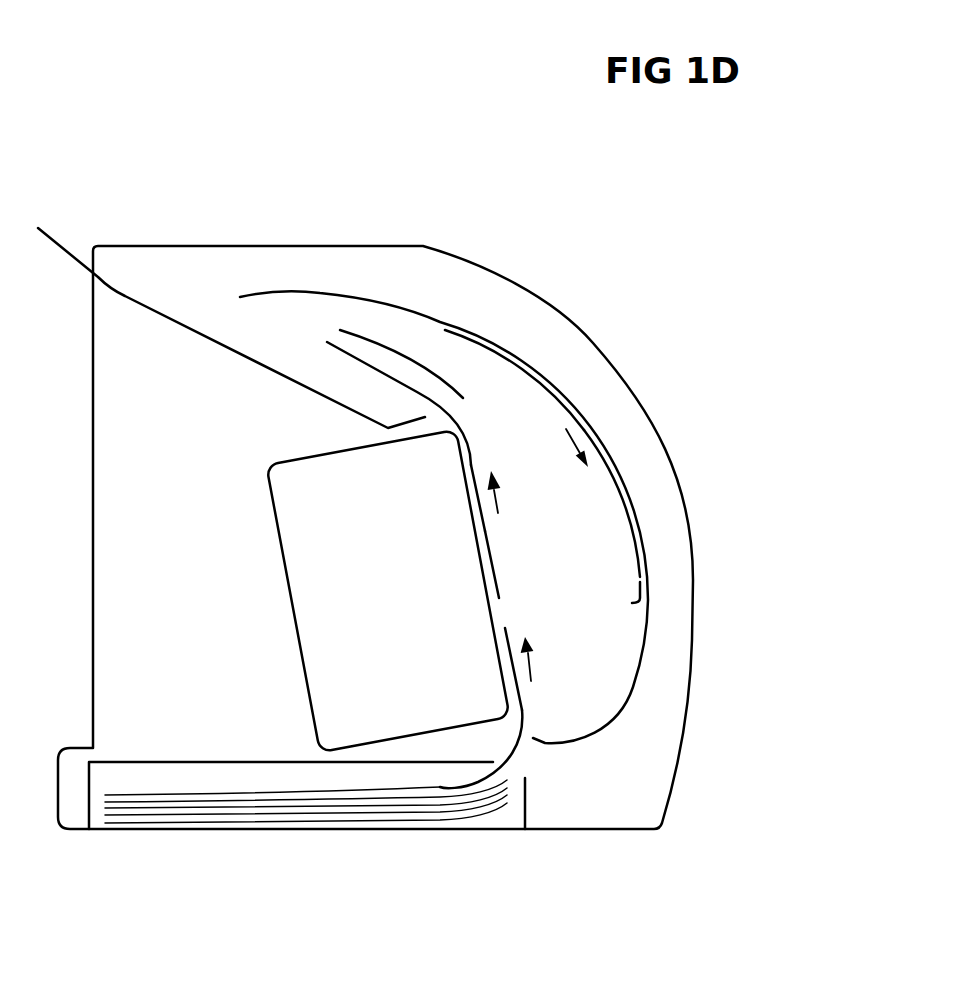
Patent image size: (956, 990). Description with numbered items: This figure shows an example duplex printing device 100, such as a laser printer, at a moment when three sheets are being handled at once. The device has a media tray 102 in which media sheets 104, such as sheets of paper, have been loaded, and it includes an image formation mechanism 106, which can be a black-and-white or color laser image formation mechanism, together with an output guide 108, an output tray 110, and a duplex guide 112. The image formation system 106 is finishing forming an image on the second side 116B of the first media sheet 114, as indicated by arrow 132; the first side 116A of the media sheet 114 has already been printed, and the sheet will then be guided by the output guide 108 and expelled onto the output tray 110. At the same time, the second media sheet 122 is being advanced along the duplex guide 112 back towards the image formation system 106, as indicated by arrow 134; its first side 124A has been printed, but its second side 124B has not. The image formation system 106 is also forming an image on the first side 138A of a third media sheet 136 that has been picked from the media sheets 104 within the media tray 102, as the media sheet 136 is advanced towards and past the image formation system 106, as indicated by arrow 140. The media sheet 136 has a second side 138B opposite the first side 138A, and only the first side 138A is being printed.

The duplex printing device 100 is at (93, 670).
The media tray 102 is at (190, 762).
The media sheets 104 is at (185, 795).
The image formation mechanism 106 is at (410, 602).
The output guide 108 is at (423, 364).
The output tray 110 is at (232, 349).
The duplex guide 112 is at (488, 340).
The first media sheet 114 is at (323, 342).
The first side of the first media sheet 116A is at (495, 562).
The second side of the first media sheet 116B is at (483, 519).
The second media sheet 122 is at (632, 603).
The first side of the second media sheet 124A is at (633, 541).
The second side of the second media sheet 124B is at (580, 382).
The arrow 132 is at (496, 503).
The arrow 134 is at (571, 440).
The third media sheet 136 is at (508, 622).
The first side of the third media sheet 138A is at (517, 755).
The second side of the third media sheet 138B is at (508, 757).
The arrow 140 is at (531, 667).